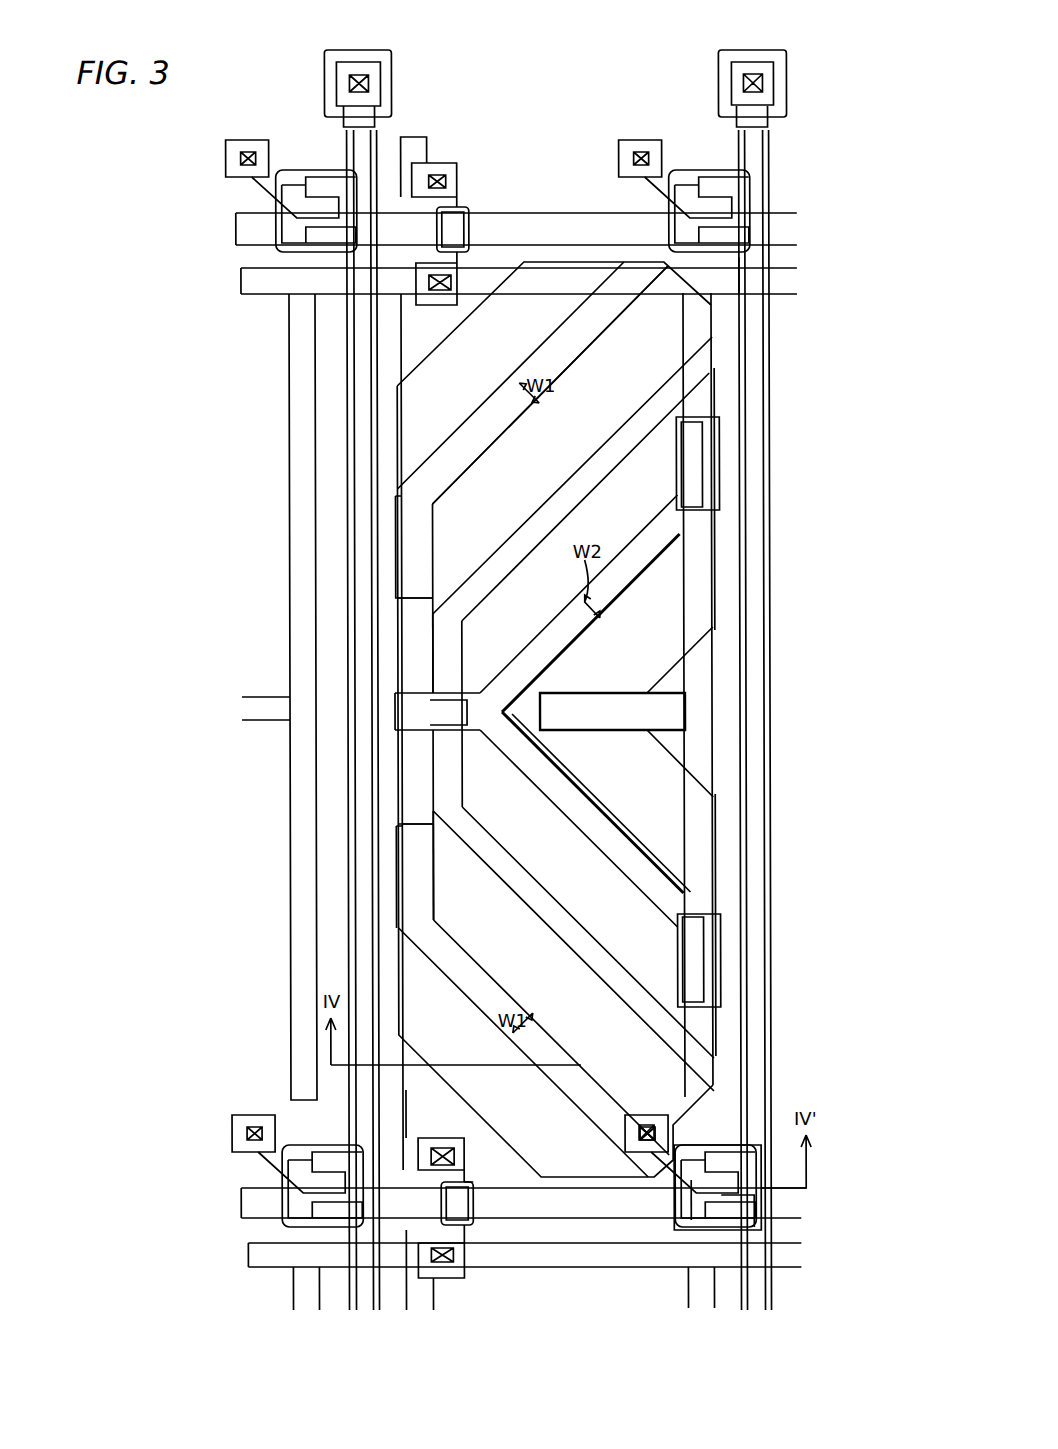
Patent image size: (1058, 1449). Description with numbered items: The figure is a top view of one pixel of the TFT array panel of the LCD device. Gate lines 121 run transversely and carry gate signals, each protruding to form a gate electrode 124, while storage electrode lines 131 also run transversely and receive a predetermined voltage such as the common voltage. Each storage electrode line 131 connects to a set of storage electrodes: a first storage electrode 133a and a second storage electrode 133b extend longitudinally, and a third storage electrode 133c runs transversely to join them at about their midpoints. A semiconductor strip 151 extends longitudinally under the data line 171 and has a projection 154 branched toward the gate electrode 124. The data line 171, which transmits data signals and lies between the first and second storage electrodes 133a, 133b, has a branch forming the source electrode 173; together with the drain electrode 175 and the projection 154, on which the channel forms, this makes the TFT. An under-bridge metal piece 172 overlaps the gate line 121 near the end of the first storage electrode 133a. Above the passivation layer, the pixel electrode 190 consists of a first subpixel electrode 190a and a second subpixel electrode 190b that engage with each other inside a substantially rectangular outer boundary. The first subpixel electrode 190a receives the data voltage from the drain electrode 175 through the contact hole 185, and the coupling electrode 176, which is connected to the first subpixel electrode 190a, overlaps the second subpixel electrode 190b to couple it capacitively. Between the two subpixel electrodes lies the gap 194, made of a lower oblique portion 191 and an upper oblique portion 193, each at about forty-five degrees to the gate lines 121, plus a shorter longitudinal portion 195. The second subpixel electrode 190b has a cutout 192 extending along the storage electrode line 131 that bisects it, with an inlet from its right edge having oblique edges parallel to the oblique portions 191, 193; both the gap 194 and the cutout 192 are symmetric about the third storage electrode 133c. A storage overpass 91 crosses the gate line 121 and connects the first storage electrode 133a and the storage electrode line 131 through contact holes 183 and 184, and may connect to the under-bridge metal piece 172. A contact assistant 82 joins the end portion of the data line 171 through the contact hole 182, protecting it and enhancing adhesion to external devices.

The contact assistant 82 is at (738, 55).
The storage overpass 91 is at (478, 1225).
The gate line 121 is at (572, 213).
The gate electrode 124 is at (677, 1225).
The storage electrode line 131 is at (496, 265).
The first storage electrode 133a is at (400, 346).
The second storage electrode 133b is at (720, 650).
The third storage electrode 133c is at (660, 690).
The semiconductor strip 151 is at (752, 465).
The projection of semiconductor strip 154 is at (670, 1202).
The data line 171 is at (762, 62).
The under-bridge metal piece 172 is at (443, 1205).
The source electrode 173 is at (723, 1222).
The drain electrode 175 is at (625, 1135).
The coupling electrode 176 is at (604, 808).
The contact hole 182 is at (766, 83).
The contact hole 183 is at (450, 1138).
The contact hole 184 is at (440, 1265).
The contact hole 185 is at (645, 1125).
The pixel electrode 190 is at (649, 799).
The first subpixel electrode 190a is at (712, 322).
The second subpixel electrode 190b is at (715, 395).
The lower oblique portion of gap 191 is at (430, 865).
The cutout 192 is at (606, 730).
The upper oblique portion of gap 193 is at (490, 548).
The gap 194 is at (175, 585).
The longitudinal portion of gap 195 is at (430, 665).